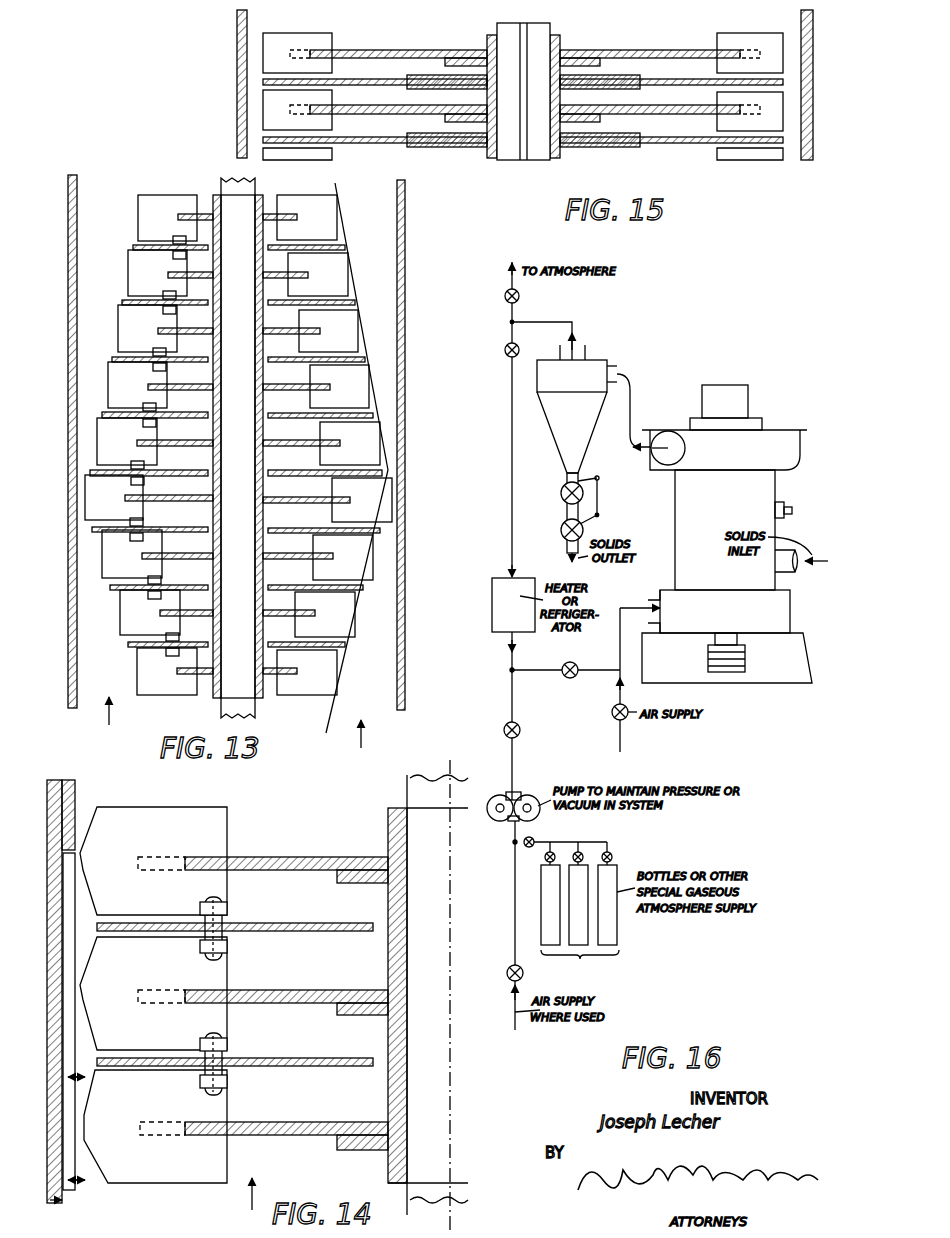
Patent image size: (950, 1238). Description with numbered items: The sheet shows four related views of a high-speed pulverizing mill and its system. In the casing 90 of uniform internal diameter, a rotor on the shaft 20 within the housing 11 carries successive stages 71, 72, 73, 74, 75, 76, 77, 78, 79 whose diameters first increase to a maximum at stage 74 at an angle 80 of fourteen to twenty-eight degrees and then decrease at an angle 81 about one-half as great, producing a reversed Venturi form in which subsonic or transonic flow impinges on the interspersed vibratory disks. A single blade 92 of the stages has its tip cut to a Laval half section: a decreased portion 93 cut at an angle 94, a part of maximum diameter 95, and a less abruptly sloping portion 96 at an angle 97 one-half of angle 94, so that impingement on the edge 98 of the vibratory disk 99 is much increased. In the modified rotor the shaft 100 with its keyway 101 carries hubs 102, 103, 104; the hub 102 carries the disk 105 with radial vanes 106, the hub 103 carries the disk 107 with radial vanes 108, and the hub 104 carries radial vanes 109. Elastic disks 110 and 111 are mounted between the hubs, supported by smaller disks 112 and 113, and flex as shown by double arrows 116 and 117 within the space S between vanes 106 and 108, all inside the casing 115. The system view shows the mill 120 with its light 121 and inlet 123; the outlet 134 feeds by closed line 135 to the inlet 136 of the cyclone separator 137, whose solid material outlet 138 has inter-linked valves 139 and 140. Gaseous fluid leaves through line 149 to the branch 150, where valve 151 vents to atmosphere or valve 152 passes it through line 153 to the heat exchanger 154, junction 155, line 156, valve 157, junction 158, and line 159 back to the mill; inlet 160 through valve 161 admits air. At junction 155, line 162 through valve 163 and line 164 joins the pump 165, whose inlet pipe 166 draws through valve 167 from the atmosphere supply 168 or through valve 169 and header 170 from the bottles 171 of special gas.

In FIG. 14, the cylindrical housing 11 is at (55, 1140).
In FIG. 14, the shaft 20 is at (430, 961).
In FIG. 13, the stage 71 is at (307, 672).
In FIG. 13, the stage 72 is at (325, 614).
In FIG. 13, the stage 73 is at (343, 558).
In FIG. 13, the stage 74 is at (362, 500).
In FIG. 13, the stage 75 is at (350, 445).
In FIG. 13, the stage 76 is at (340, 387).
In FIG. 13, the stage 77 is at (329, 331).
In FIG. 13, the stage 78 is at (318, 274).
In FIG. 13, the stage 79 is at (307, 218).
In FIG. 13, the angle 80 is at (397, 708).
In FIG. 13, the angle 81 is at (397, 200).
In FIG. 13, the casing 90 is at (68, 357).
In FIG. 14, the blade 92 is at (172, 1175).
In FIG. 14, the decreased-width portion 93 is at (105, 1175).
In FIG. 14, the angle 94 is at (95, 1184).
In FIG. 14, the part of maximum diameter 95 is at (93, 1137).
In FIG. 14, the sloping portion 96 is at (90, 1091).
In FIG. 14, the angle 97 is at (80, 1060).
In FIG. 14, the edge 98 is at (95, 1060).
In FIG. 14, the vibratory disk 99 is at (310, 1066).
In FIG. 15, the shaft 100 is at (535, 155).
In FIG. 15, the keyway 101 is at (522, 150).
In FIG. 15, the hub 102 is at (562, 40).
In FIG. 15, the hub 103 is at (602, 120).
In FIG. 15, the hub 104 is at (559, 158).
In FIG. 15, the disk 105 is at (615, 50).
In FIG. 15, the radial vanes 106 is at (300, 36).
In FIG. 15, the disk 107 is at (644, 108).
In FIG. 15, the radial vanes 108 is at (265, 108).
In FIG. 15, the radial vanes 109 is at (307, 154).
In FIG. 15, the disk 110 is at (674, 76).
In FIG. 15, the disk 111 is at (682, 146).
In FIG. 15, the smaller disks 112 is at (625, 76).
In FIG. 15, the smaller disks 113 is at (640, 134).
In FIG. 15, the casing 115 is at (240, 56).
In FIG. 15, the double arrows 116 is at (345, 92).
In FIG. 15, the double arrows 117 is at (345, 150).
In FIG. 15, the space S is at (790, 66).
In FIG. 16, the mill 120 is at (778, 478).
In FIG. 16, the special light 121 is at (790, 508).
In FIG. 16, the inlet 123 is at (650, 595).
In FIG. 16, the outlet 134 is at (668, 440).
In FIG. 16, the closed line 135 is at (631, 392).
In FIG. 16, the inlet 136 is at (618, 363).
In FIG. 16, the solid separator 137 is at (590, 372).
In FIG. 16, the solid material outlet 138 is at (567, 466).
In FIG. 16, the valve 139 is at (561, 493).
In FIG. 16, the valve 140 is at (561, 529).
In FIG. 16, the closed line 149 is at (574, 321).
In FIG. 16, the branch 150 is at (514, 321).
In FIG. 16, the valve 151 is at (520, 296).
In FIG. 16, the valve 152 is at (520, 347).
In FIG. 16, the line 153 is at (512, 418).
In FIG. 16, the heat exchanger 154 is at (525, 580).
In FIG. 16, the junction 155 is at (515, 672).
In FIG. 16, the line 156 is at (553, 668).
In FIG. 16, the valve 157 is at (577, 664).
In FIG. 16, the junction 158 is at (622, 668).
In FIG. 16, the line 159 is at (621, 608).
In FIG. 16, the inlet 160 is at (620, 694).
In FIG. 16, the valve 161 is at (612, 712).
In FIG. 16, the line 162 is at (514, 704).
In FIG. 16, the valve 163 is at (520, 730).
In FIG. 16, the line 164 is at (514, 748).
In FIG. 16, the pump 165 is at (532, 796).
In FIG. 16, the inlet pipe 166 is at (512, 831).
In FIG. 16, the valve 167 is at (523, 974).
In FIG. 16, the atmosphere supply 168 is at (515, 1028).
In FIG. 16, the valve 169 is at (533, 838).
In FIG. 16, the header 170 is at (587, 842).
In FIG. 16, the bottles 171 is at (584, 955).